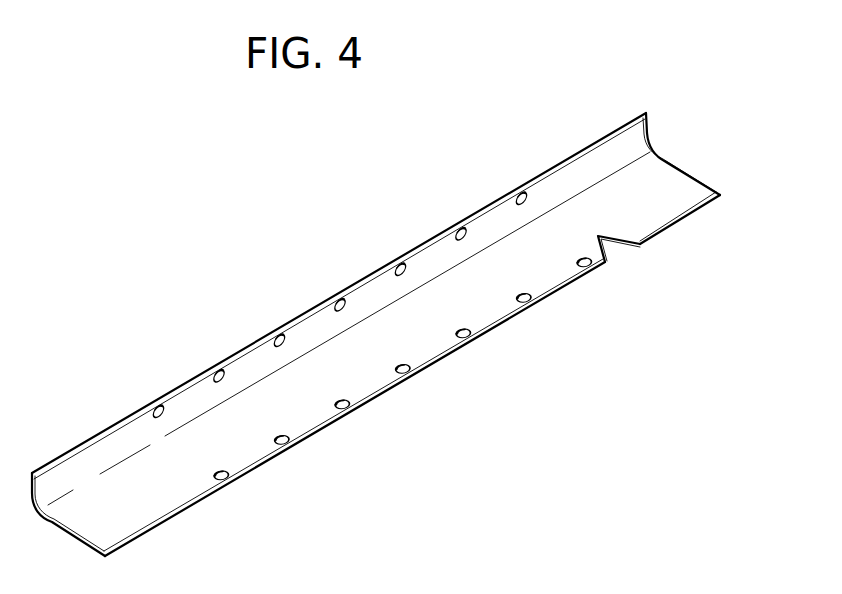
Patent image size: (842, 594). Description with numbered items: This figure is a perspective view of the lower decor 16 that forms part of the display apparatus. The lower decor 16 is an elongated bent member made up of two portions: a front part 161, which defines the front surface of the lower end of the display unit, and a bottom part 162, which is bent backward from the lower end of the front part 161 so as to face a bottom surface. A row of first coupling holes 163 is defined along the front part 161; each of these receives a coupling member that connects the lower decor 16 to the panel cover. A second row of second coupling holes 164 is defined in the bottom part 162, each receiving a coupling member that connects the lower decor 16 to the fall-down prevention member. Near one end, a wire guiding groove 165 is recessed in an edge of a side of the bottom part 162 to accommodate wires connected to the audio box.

The lower decor 16 is at (358, 188).
The front part 161 is at (117, 421).
The bottom part 162 is at (136, 522).
The first coupling holes 163 is at (225, 371).
The second coupling holes 164 is at (291, 435).
The wire guiding groove 165 is at (609, 256).